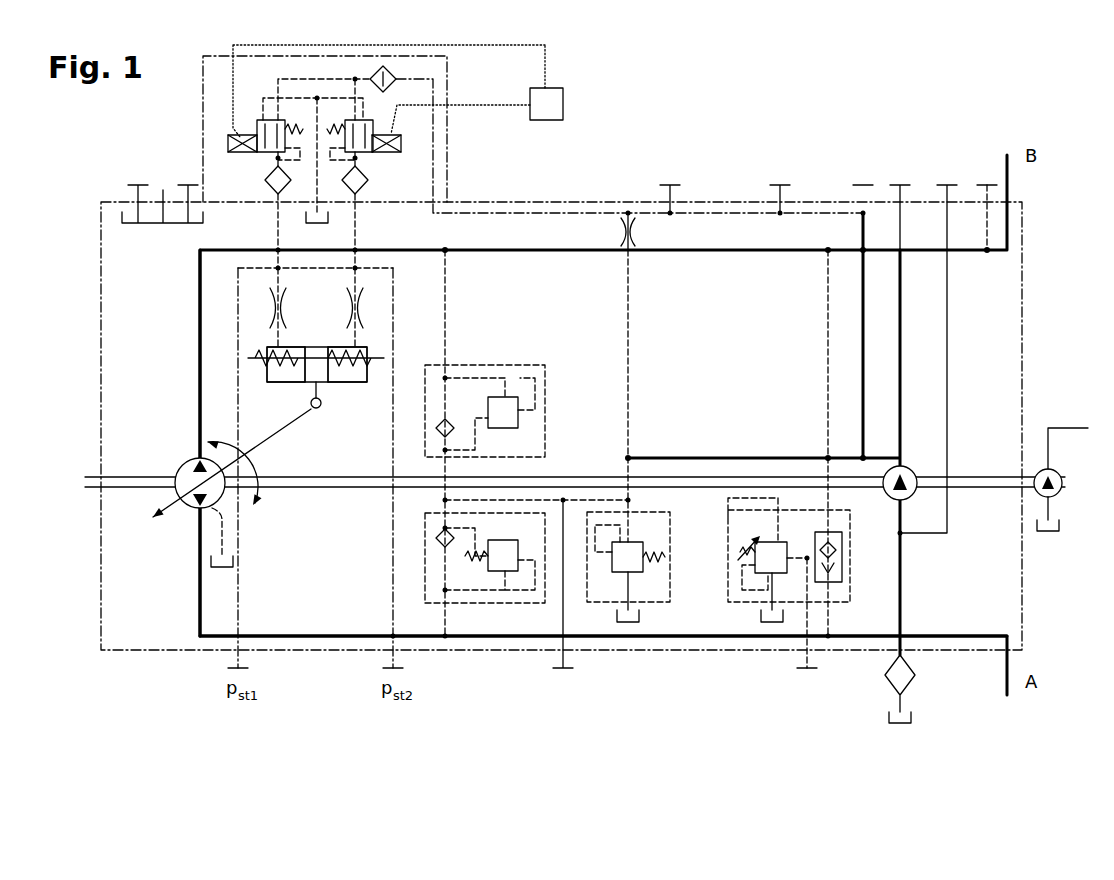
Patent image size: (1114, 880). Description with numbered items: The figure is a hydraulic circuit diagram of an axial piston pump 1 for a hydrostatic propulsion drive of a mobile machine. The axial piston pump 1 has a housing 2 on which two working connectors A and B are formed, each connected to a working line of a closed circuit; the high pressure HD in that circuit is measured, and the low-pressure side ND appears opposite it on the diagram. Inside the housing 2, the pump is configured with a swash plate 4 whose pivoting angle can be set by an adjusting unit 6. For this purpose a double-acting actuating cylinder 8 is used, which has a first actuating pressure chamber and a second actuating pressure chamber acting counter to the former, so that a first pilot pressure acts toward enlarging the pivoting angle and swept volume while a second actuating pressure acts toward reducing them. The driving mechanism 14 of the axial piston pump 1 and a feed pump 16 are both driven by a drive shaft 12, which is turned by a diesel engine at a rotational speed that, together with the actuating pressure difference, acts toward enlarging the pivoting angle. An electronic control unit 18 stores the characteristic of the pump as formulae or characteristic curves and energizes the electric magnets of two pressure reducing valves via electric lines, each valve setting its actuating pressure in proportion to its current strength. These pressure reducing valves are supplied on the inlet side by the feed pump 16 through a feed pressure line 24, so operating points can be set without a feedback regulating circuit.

The axial piston pump 1 is at (1030, 102).
The housing 2 is at (628, 208).
The swash plate 4 is at (262, 507).
The adjusting unit 6 is at (155, 157).
The double-acting actuating cylinder 8 is at (314, 336).
The drive shaft 12 is at (125, 476).
The driving mechanism 14 is at (177, 470).
The feed pump 16 is at (910, 468).
The electronic control unit 18 is at (565, 103).
The feed pressure line 24 is at (518, 218).
The high pressure HD is at (760, 248).
The low pressure line ND is at (752, 638).